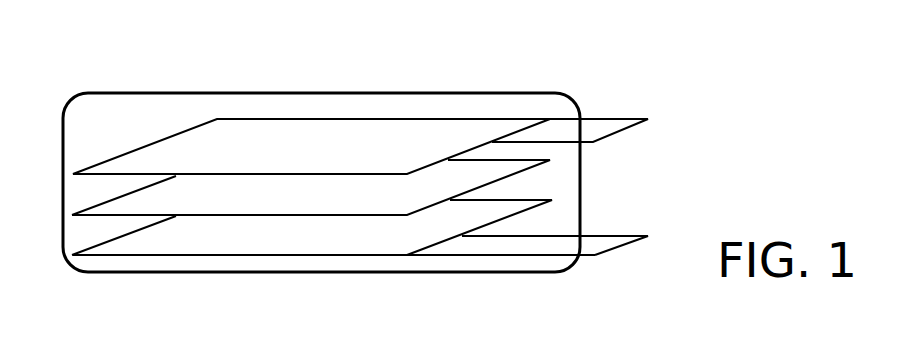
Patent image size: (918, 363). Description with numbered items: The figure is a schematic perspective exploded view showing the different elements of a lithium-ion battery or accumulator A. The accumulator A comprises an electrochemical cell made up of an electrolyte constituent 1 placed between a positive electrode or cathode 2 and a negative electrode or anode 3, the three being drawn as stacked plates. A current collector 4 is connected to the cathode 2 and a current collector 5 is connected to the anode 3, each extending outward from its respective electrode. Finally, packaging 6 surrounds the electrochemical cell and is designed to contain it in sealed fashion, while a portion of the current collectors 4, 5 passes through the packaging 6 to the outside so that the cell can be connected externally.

The lithium-ion battery or accumulator A is at (386, 167).
The electrolyte constituent 1 is at (507, 180).
The positive electrode or cathode 2 is at (380, 140).
The negative electrode or anode 3 is at (232, 237).
The current collector 4 is at (603, 125).
The current collector 5 is at (595, 241).
The packaging 6 is at (343, 273).